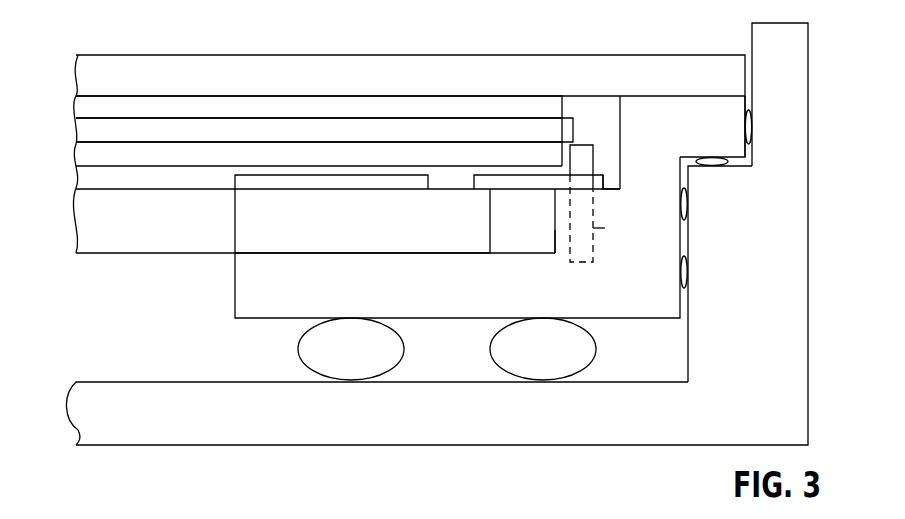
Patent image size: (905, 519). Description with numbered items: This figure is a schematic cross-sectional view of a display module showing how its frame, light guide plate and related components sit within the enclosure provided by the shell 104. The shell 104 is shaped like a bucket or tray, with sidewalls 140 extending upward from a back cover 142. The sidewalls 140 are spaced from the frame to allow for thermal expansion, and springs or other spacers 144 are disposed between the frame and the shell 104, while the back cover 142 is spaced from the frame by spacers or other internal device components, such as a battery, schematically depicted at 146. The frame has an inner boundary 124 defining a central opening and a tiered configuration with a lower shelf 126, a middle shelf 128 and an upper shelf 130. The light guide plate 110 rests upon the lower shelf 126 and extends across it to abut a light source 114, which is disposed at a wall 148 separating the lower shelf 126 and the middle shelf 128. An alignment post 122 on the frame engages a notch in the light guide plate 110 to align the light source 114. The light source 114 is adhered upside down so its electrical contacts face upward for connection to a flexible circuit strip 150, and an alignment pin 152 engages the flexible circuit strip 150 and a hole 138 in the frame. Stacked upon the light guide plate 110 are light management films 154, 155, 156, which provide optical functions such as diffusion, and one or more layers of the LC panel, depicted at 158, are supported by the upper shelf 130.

The shell 104 is at (808, 85).
The light guide plate 110 is at (348, 221).
The light source 114 is at (522, 221).
The alignment post 122 is at (233, 177).
The inner boundary 124 is at (235, 283).
The lower shelf 126 is at (397, 253).
The middle shelf 128 is at (607, 188).
The upper shelf 130 is at (663, 95).
The hole 138 is at (611, 229).
The sidewall 140 is at (726, 274).
The back cover 142 is at (377, 413).
The spacer 144 is at (714, 167).
The internal device component 146 is at (447, 349).
The wall 148 is at (553, 242).
The flexible circuit strip 150 is at (505, 172).
The alignment pin 152 is at (588, 145).
The light management film 154 is at (75, 157).
The light management film 155 is at (75, 141).
The light management film 156 is at (73, 104).
The LC panel layer 158 is at (409, 154).